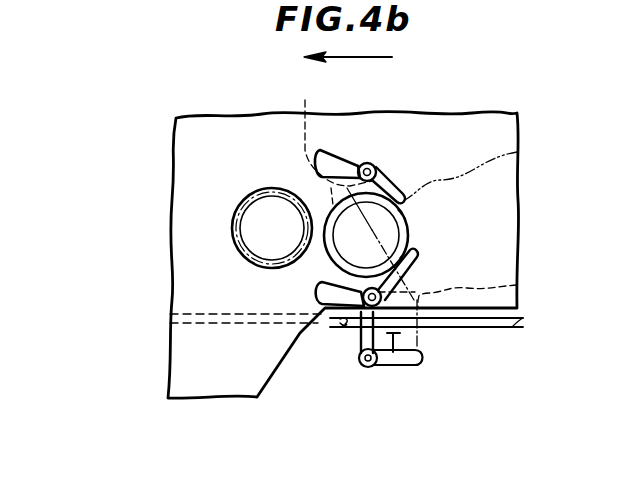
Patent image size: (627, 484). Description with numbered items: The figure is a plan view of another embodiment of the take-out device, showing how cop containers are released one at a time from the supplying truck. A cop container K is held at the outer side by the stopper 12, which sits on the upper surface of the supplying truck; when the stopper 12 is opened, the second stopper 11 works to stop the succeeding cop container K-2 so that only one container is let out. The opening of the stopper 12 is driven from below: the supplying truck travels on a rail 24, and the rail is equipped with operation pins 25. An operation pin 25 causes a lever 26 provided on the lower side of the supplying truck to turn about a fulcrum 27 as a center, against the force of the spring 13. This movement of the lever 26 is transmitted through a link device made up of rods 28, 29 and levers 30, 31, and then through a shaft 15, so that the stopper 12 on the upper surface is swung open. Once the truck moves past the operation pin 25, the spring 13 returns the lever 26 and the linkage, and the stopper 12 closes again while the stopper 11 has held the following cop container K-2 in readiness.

The cop container K is at (340, 196).
The succeeding cop container K-2 is at (256, 190).
The stopper 11 is at (343, 160).
The stopper 12 is at (397, 190).
The spring 13 is at (407, 365).
The shaft 15 is at (371, 162).
The rail 24 is at (517, 313).
The operation pin 25 is at (338, 327).
The lever 26 is at (363, 337).
The fulcrum 27 is at (370, 367).
The rod 28 is at (420, 343).
The rod 29 is at (517, 152).
The lever 30 is at (517, 285).
The lever 31 is at (356, 207).